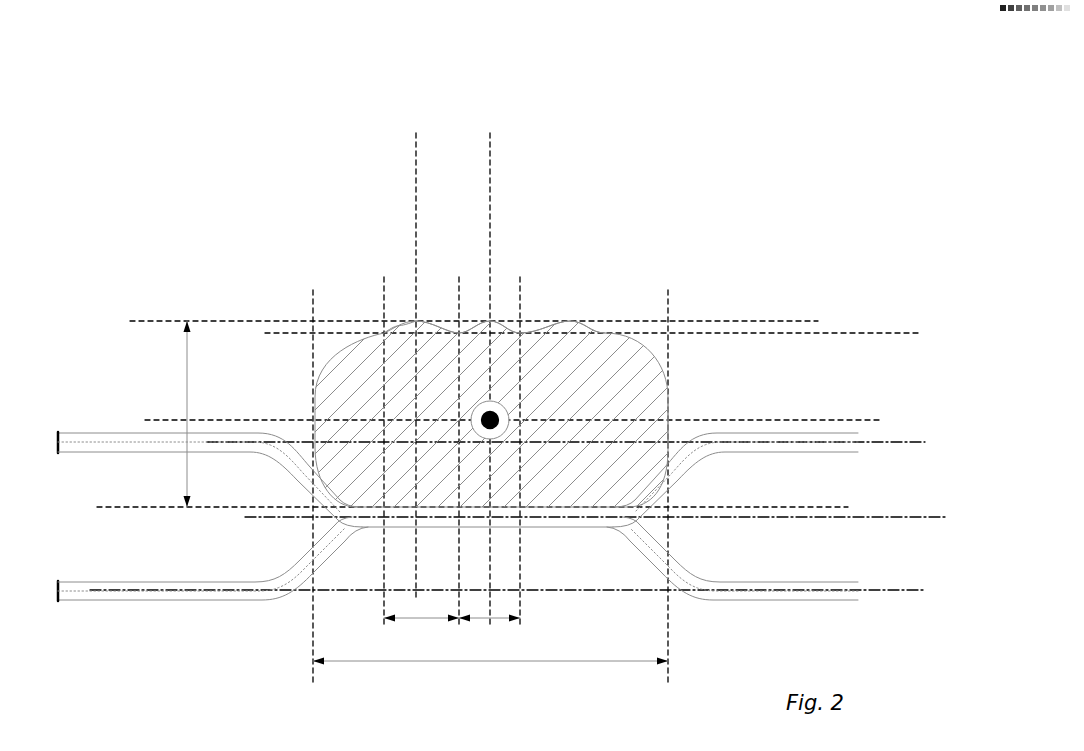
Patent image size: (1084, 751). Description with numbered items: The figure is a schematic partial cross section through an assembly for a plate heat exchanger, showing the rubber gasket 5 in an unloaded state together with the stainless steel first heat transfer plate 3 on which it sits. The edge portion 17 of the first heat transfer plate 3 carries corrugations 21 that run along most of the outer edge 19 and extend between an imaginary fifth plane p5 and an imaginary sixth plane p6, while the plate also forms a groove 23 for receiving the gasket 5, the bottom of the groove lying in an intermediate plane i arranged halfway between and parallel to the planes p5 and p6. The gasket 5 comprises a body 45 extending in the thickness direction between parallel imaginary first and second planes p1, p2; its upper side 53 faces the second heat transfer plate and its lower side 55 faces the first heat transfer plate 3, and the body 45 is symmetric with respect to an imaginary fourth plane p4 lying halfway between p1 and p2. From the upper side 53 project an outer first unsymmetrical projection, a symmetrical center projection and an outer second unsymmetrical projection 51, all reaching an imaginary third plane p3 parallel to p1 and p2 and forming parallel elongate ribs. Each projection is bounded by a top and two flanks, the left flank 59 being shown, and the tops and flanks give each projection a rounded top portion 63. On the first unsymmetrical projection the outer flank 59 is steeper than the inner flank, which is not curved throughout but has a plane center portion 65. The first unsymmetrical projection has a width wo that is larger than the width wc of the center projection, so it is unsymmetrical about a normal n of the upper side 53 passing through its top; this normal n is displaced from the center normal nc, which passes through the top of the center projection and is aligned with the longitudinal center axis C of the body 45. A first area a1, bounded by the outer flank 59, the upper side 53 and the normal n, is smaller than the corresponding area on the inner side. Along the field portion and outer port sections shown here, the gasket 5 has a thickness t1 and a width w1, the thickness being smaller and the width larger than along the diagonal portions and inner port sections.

The gasket 5 is at (297, 142).
The first heat transfer plate 3 is at (80, 434).
The corrugations 21 is at (123, 433).
The edge portion 17 is at (207, 600).
The outer edge 19 is at (57, 601).
The groove 23 is at (668, 420).
The body 45 is at (362, 380).
The second unsymmetrical projection 51 is at (570, 322).
The upper side 53 is at (605, 335).
The lower side 55 is at (528, 508).
The flank 59 is at (473, 321).
The rounded top portion 63 is at (500, 321).
The plane center portion 65 is at (435, 321).
The longitudinal center axis C is at (490, 432).
The first area a1 is at (405, 321).
The normal n is at (414, 353).
The center normal nc is at (490, 366).
The imaginary first plane p1 is at (455, 508).
The imaginary second plane p2 is at (609, 333).
The imaginary third plane p3 is at (490, 322).
The imaginary fourth plane p4 is at (529, 421).
The imaginary fifth plane p5 is at (523, 591).
The imaginary sixth plane p6 is at (582, 442).
The intermediate plane i is at (601, 517).
The thickness t1 is at (173, 414).
The width of the first unsymmetrical projection wo is at (421, 633).
The width of the center projection wc is at (489, 633).
The width of the gasket w1 is at (490, 676).